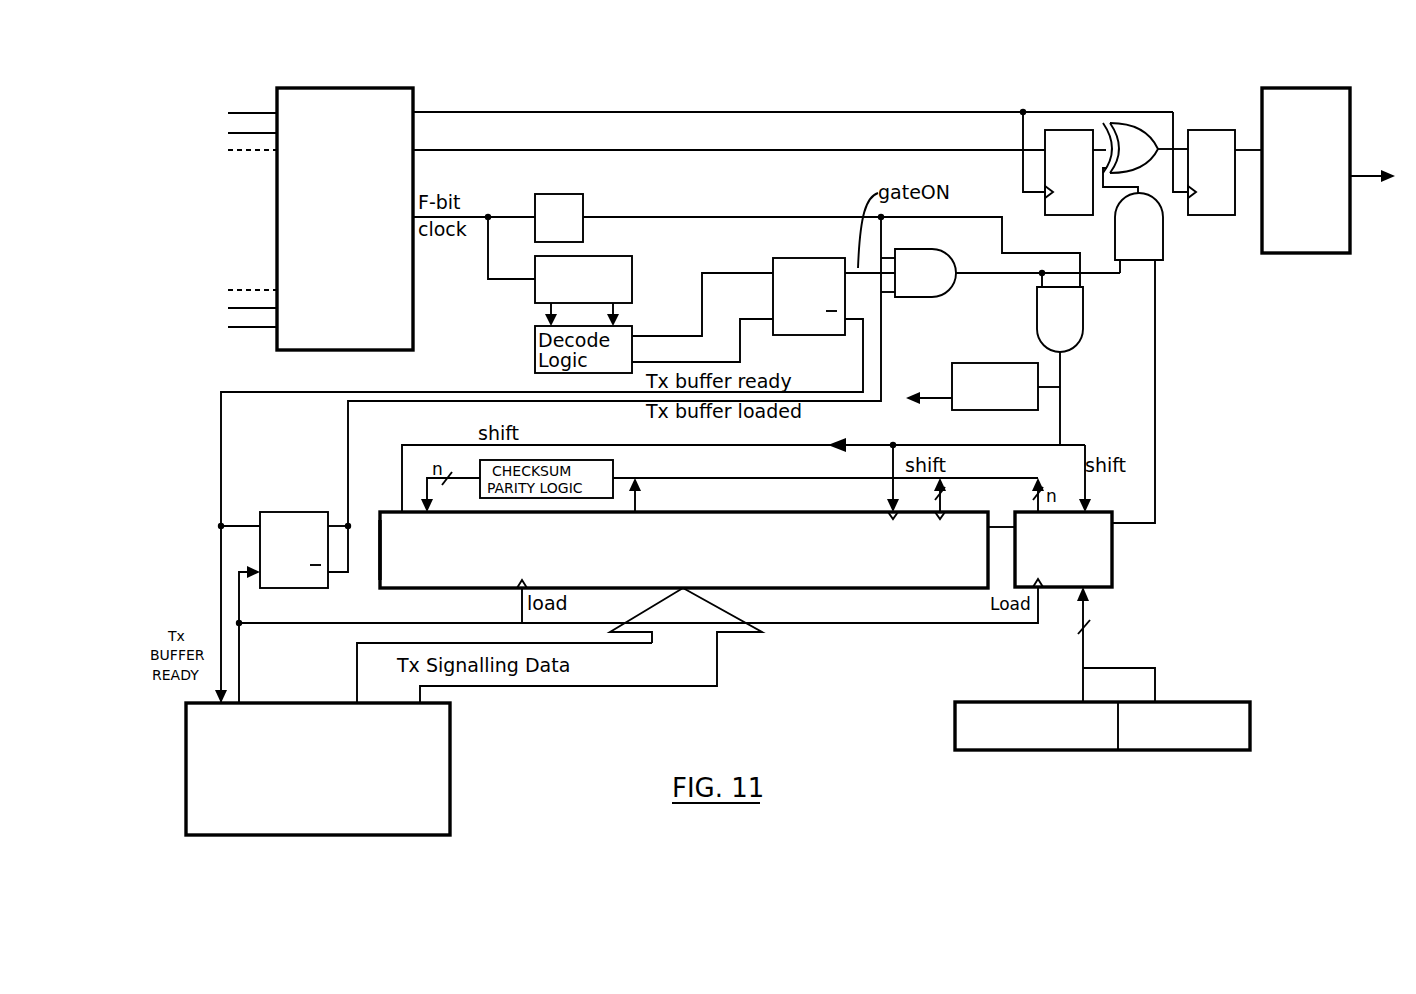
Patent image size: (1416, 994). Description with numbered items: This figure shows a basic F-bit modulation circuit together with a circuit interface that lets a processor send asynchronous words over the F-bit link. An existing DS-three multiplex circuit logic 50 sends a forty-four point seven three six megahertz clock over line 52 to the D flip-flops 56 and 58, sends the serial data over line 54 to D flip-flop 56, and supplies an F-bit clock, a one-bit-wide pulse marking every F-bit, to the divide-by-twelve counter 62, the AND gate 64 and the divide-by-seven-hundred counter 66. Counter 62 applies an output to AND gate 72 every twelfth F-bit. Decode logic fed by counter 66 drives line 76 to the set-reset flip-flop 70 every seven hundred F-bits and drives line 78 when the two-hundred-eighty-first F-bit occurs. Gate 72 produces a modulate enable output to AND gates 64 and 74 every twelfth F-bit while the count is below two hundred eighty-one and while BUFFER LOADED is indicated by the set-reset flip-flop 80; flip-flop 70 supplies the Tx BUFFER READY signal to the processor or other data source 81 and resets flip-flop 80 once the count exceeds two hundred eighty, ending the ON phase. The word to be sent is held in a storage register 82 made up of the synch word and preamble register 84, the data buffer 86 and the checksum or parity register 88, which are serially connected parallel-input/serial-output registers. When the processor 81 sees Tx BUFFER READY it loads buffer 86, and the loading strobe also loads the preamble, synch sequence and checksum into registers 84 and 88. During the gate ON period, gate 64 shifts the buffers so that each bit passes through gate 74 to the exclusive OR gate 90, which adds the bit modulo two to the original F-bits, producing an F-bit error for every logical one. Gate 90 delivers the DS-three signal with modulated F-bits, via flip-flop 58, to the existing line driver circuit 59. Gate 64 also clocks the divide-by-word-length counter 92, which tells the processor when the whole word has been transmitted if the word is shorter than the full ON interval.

The DS3 multiplex circuit logic 50 is at (277, 338).
The clock line 52 is at (810, 112).
The serial data line 54 is at (810, 150).
The D flip-flop 56 is at (1048, 130).
The D flip-flop 58 is at (1212, 130).
The line driver circuit 59 is at (1308, 181).
The ÷12 counter 62 is at (576, 194).
The AND gate 64 is at (1083, 345).
The ÷700 counter 66 is at (615, 256).
The set-reset flip-flop 70 is at (835, 258).
The AND gate 72 is at (940, 250).
The AND gate 74 is at (1163, 225).
The line 76 is at (702, 278).
The line 78 is at (740, 355).
The set-reset flip-flop 80 is at (316, 512).
The processor or other data source 81 is at (452, 774).
The storage register 82 is at (955, 727).
The synch word and preamble register 84 is at (1112, 515).
The data buffer 86 is at (772, 512).
The checksum or parity register 88 is at (380, 535).
The exclusive OR gate 90 is at (1148, 130).
The ÷ word length counter 92 is at (988, 363).